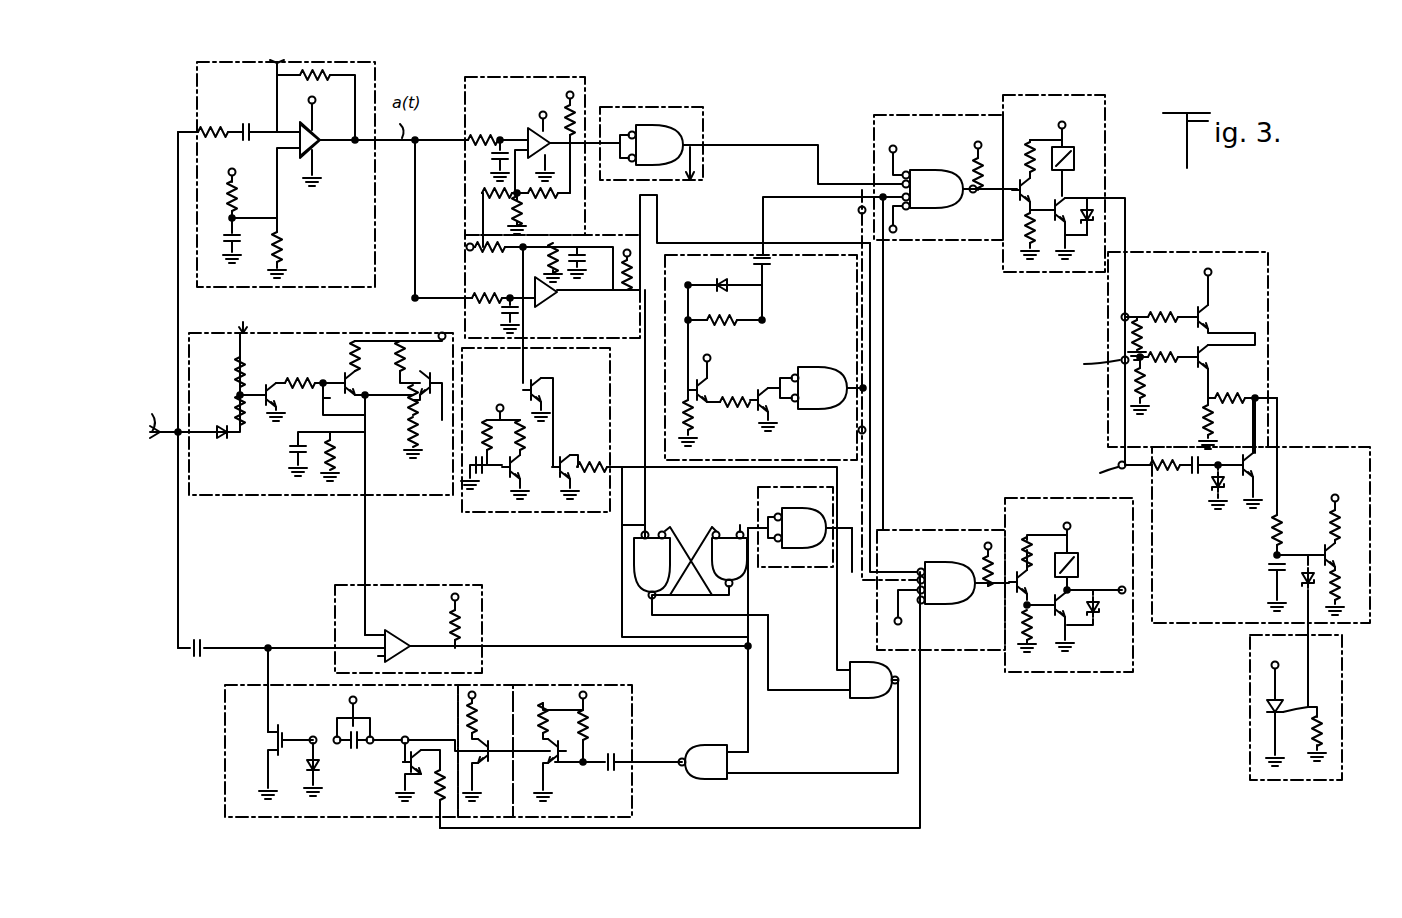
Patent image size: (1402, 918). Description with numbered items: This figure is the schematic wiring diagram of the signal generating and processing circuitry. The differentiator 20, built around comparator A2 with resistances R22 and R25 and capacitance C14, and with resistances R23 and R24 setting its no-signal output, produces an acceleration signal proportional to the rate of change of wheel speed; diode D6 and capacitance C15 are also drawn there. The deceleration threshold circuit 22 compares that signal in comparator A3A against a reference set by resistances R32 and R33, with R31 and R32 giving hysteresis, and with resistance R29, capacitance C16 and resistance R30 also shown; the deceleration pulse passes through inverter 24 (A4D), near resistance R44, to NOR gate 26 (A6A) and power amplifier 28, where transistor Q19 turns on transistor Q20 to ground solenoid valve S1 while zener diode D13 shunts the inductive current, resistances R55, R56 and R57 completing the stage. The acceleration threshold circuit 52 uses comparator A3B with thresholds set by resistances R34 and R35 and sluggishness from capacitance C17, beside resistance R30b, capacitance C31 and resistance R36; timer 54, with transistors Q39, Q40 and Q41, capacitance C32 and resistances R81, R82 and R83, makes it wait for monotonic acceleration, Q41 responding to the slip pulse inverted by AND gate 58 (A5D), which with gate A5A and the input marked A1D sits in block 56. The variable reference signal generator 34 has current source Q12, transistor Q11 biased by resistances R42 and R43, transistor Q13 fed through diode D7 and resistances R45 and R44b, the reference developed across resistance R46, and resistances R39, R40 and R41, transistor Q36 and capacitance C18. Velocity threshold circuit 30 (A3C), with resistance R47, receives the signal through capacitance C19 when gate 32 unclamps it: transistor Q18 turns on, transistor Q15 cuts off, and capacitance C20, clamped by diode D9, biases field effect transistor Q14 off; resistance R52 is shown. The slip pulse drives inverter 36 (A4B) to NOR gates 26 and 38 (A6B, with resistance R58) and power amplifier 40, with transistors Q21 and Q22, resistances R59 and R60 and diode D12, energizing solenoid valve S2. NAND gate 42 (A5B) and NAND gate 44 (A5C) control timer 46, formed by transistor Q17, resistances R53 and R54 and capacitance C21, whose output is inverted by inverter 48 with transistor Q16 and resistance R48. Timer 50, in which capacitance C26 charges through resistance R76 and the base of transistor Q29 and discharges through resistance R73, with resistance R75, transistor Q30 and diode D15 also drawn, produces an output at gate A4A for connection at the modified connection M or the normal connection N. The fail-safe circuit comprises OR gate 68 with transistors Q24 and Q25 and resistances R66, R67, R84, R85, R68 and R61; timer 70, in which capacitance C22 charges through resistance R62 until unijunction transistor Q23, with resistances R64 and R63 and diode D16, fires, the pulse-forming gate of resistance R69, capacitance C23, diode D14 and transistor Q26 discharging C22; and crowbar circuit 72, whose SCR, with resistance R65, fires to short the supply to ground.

The differentiator 20 is at (376, 64).
The deceleration threshold circuit 22 is at (510, 75).
The inverter 24 is at (660, 105).
The NOR gate 26 is at (952, 107).
The power amplifier 28 is at (1051, 88).
The velocity threshold circuit 30 is at (435, 579).
The gate 32 is at (222, 705).
The variable reference signal generator 34 is at (260, 496).
The inverter 36 is at (776, 566).
The NOR gate 38 is at (947, 519).
The power amplifier 40 is at (1049, 489).
The NAND gate 42 is at (703, 752).
The NAND gate 44 is at (870, 688).
The timer 46 is at (568, 680).
The inverter 48 is at (508, 687).
The timer 50 is at (865, 331).
The acceleration threshold circuit 52 is at (636, 231).
The timer 54 is at (456, 516).
The flip-flop 56 is at (640, 598).
The AND gate 58 is at (729, 557).
The OR gate 68 is at (1271, 244).
The timer 70 is at (1343, 442).
The crowbar circuit 72 is at (1242, 666).
The comparator A2 is at (299, 142).
The diode D6 is at (278, 58).
The resistance R22 is at (210, 146).
The capacitance C14 is at (247, 124).
The resistance R25 is at (316, 105).
The resistance R23 is at (248, 198).
The capacitor C15 is at (227, 234).
The resistance R24 is at (284, 235).
The comparator A3A is at (532, 130).
The resistor R29 is at (484, 127).
The capacitor C16 is at (493, 155).
The resistor R30 is at (576, 116).
The resistance R33 is at (488, 191).
The resistance R31 is at (542, 201).
The resistance R32 is at (538, 213).
The inverter A4D is at (660, 145).
The resistance R44 is at (694, 176).
The NOR gate A6A is at (931, 166).
The resistor R55 is at (977, 175).
The modified configuration connection M is at (859, 211).
The normal configuration connection N is at (859, 430).
The resistor R56 is at (1024, 146).
The solenoid valve S1 is at (1072, 150).
The transistor Q19 is at (1037, 190).
The transistor Q20 is at (1054, 245).
The zener diode D13 is at (1090, 206).
The resistor R57 is at (1025, 230).
The transistor Q24 is at (1210, 320).
The transistor Q25 is at (1193, 364).
The resistor R66 is at (1157, 304).
The resistor R67 is at (1165, 344).
The resistor R84 is at (1128, 330).
The resistor R85 is at (1160, 391).
The resistance R68 is at (1242, 385).
The resistor R61 is at (1202, 420).
The resistance R69 is at (1167, 478).
The capacitance C23 is at (1198, 474).
The diode D14 is at (1208, 504).
The transistor Q26 is at (1246, 484).
The capacitance C22 is at (1271, 564).
The resistance R62 is at (1282, 514).
The unijunction transistor Q23 is at (1320, 546).
The resistor R64 is at (1318, 519).
The resistor R63 is at (1342, 593).
The zener diode D16 is at (1308, 578).
The element SCR is at (1268, 702).
The resistor R65 is at (1316, 754).
The resistor R59 is at (1024, 536).
The solenoid valve S2 is at (1078, 560).
The transistor Q21 is at (1014, 598).
The transistor Q22 is at (1052, 649).
The resistor R60 is at (1018, 624).
The zener diode D12 is at (1108, 618).
The NOR gate A6B is at (951, 606).
The resistor R58 is at (984, 564).
The diode D15 is at (716, 278).
The capacitance C26 is at (766, 262).
The resistance R76 is at (720, 311).
The transistor Q29 is at (714, 384).
The resistor R75 is at (730, 413).
The resistance R73 is at (705, 423).
The transistor Q30 is at (760, 386).
The gate A4A is at (812, 368).
The resistance R34 is at (478, 254).
The resistance R35 is at (548, 256).
The capacitor C31 is at (582, 266).
The resistor R36 is at (616, 260).
The comparator A3B is at (554, 298).
The capacitance C17 is at (506, 312).
The resistor R30 R30b is at (482, 294).
The transistor Q39 is at (540, 382).
The resistor R81 is at (480, 429).
The resistor R82 is at (534, 435).
The transistor Q40 is at (527, 467).
The transistor Q41 is at (570, 455).
The capacitance C32 is at (486, 477).
The resistor R83 is at (589, 479).
The diode D7 is at (225, 439).
The resistor R44 R44b is at (224, 368).
The resistance R45 is at (224, 404).
The transistor Q13 is at (284, 397).
The resistor R41 is at (299, 370).
The transistor Q12 is at (362, 381).
The transistor Q11 is at (328, 406).
The resistor R39 is at (343, 352).
The resistor R40 is at (408, 352).
The transistor Q36 is at (421, 374).
The resistance R42 is at (399, 400).
The resistance R43 is at (400, 432).
The capacitor C18 is at (294, 454).
The resistance R46 is at (344, 455).
The capacitance C19 is at (198, 640).
The comparator A3C is at (389, 632).
The resistor R47 is at (452, 622).
The field effect transistor Q14 is at (264, 740).
The diode D9 is at (310, 770).
The capacitance C20 is at (352, 752).
The transistor Q15 is at (370, 730).
The transistor Q18 is at (406, 774).
The resistor R52 is at (438, 810).
The resistor R48 is at (487, 718).
The transistor Q16 is at (494, 761).
The resistance R53 is at (533, 710).
The resistance R54 is at (598, 721).
The transistor Q17 is at (568, 766).
The capacitance C21 is at (614, 779).
The NAND gate A5B is at (695, 744).
The NAND gate A5C is at (868, 700).
The NAND gate A5A is at (653, 565).
The AND gate A5D is at (731, 536).
The gate input A1D is at (757, 507).
The inverter A4B is at (799, 527).